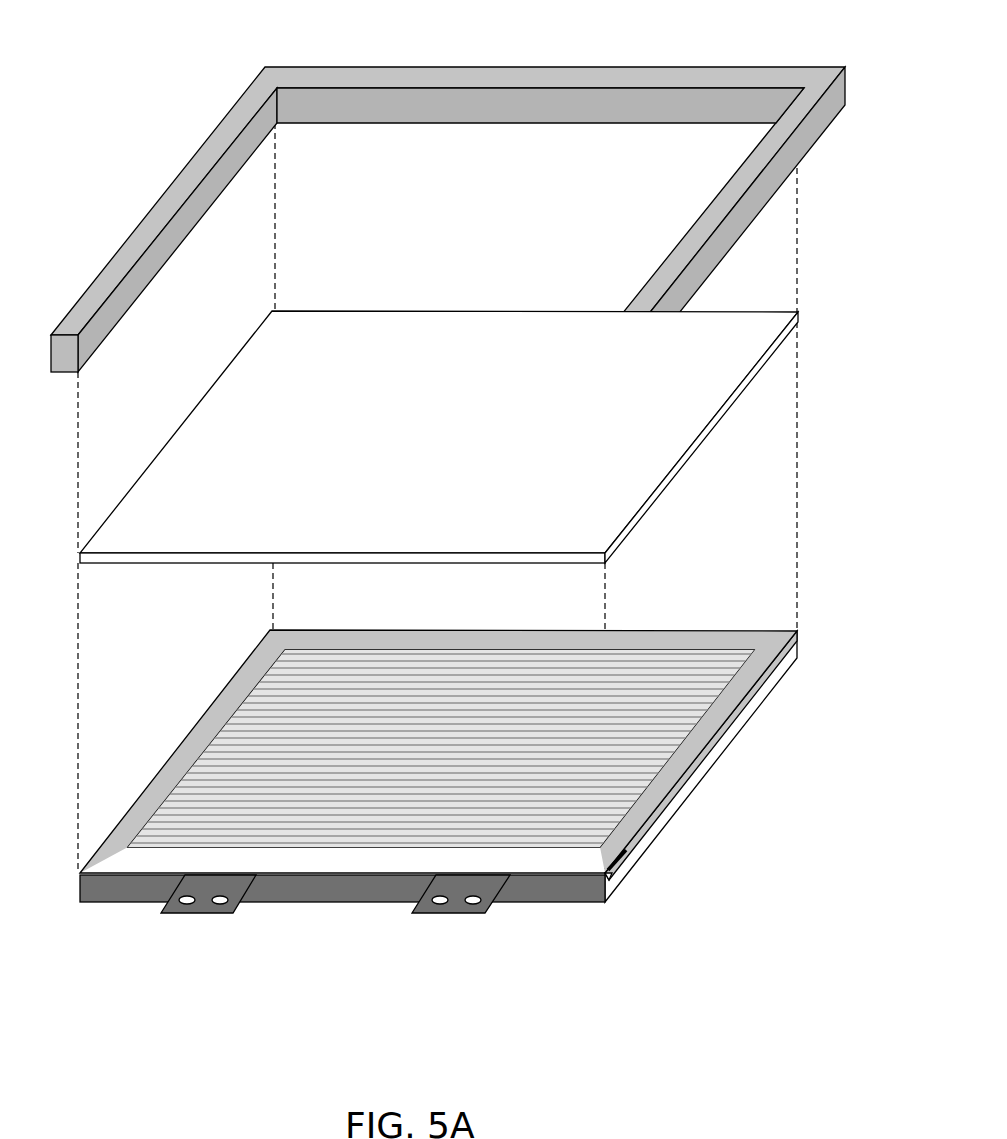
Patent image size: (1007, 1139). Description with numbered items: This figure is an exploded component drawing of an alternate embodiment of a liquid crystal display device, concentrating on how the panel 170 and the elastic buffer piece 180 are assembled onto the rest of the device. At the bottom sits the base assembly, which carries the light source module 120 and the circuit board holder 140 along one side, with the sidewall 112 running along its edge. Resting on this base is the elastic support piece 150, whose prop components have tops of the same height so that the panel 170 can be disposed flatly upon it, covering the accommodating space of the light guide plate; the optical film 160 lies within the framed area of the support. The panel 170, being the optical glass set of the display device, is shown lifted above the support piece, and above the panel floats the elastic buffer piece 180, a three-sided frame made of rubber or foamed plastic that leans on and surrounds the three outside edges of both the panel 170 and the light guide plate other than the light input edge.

The housing side wall 112 is at (718, 778).
The light source module 120 is at (613, 883).
The circuit board holder 140 is at (323, 892).
The elastic support piece 150 is at (232, 703).
The optical film 160 is at (483, 762).
The panel 170 is at (422, 432).
The elastic buffer piece 180 is at (116, 278).